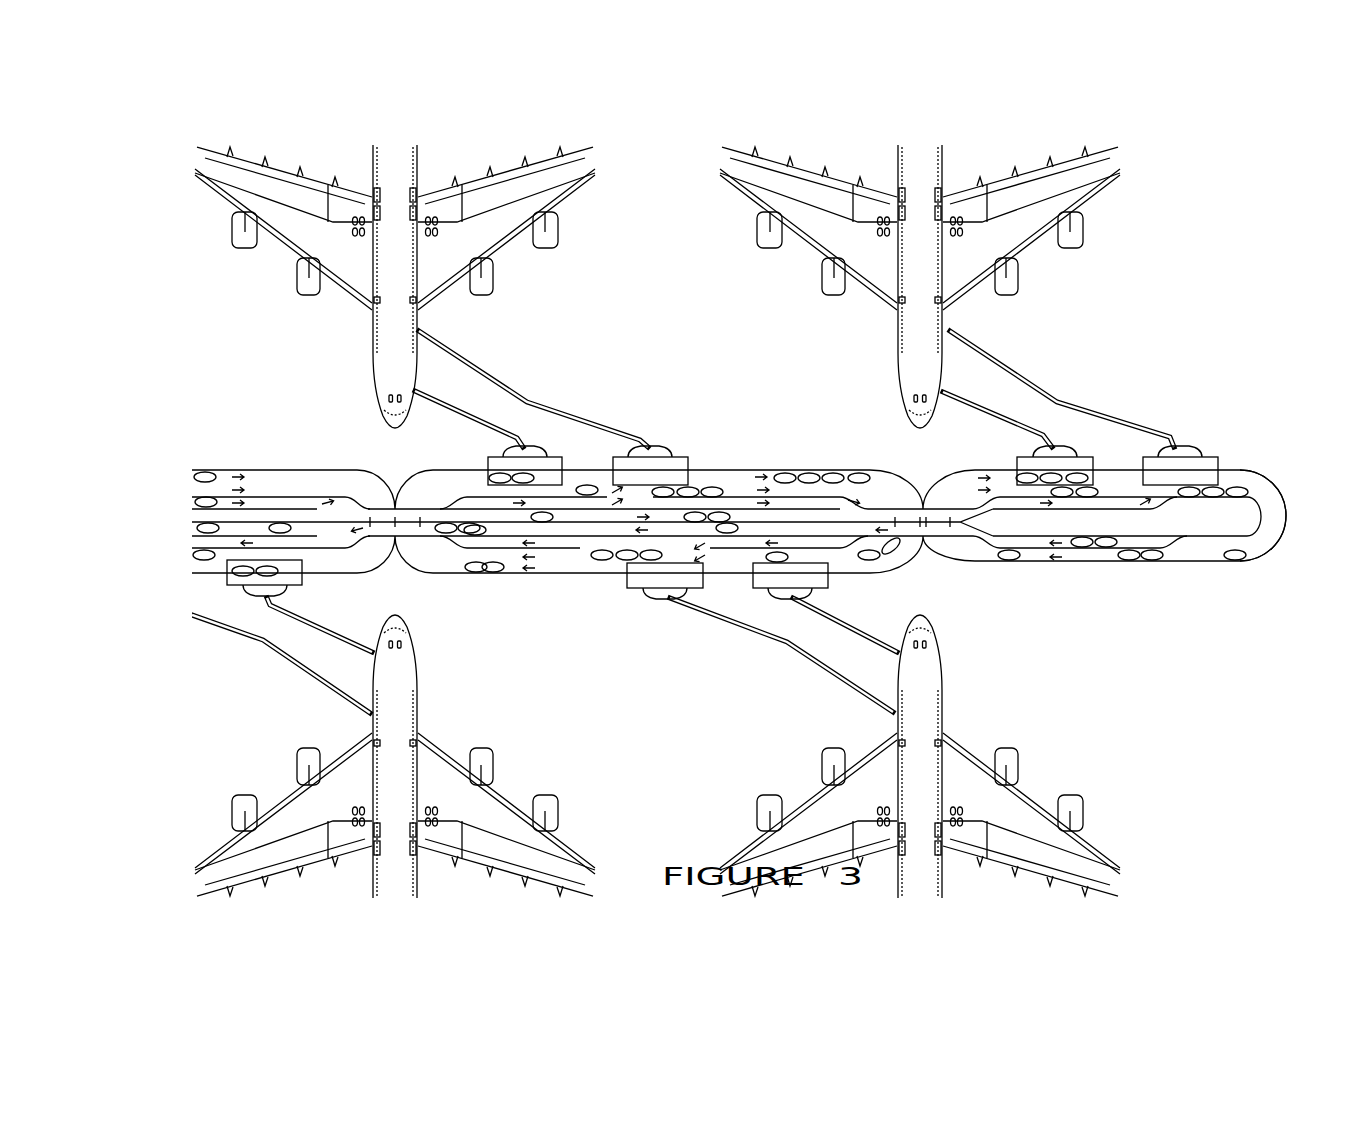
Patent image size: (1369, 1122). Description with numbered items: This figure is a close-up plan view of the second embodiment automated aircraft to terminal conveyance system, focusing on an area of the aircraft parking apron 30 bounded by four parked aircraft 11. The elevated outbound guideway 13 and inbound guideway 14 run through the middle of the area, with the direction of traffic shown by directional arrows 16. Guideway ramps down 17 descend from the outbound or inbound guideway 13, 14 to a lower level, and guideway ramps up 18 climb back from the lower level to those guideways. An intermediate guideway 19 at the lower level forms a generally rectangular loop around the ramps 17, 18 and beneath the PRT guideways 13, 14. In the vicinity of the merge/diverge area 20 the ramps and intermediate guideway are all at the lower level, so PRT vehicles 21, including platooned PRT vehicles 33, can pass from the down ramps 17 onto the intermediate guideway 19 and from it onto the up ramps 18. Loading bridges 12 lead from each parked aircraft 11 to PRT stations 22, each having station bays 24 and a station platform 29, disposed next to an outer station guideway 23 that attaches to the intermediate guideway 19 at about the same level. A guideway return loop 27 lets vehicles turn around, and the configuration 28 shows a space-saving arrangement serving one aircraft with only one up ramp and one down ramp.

The parked aircraft 11 is at (610, 165).
The aircraft loading bridge 12 is at (452, 410).
The outbound guideway 13 is at (783, 520).
The inbound guideway 14 is at (515, 530).
The directional arrow indicating direction of traffic 16 is at (436, 500).
The guideway ramp down 17 is at (487, 503).
The guideway ramp up 18 is at (822, 503).
The intermediate guideway 19 is at (972, 493).
The merge/diverge area 20 is at (647, 480).
The PRT vehicle 21 is at (280, 523).
The station 22 is at (633, 497).
The station guideway 23 is at (710, 492).
The station bay 24 is at (550, 480).
The guideway return loop 27 is at (905, 556).
The configuration serving only one aircraft with one up and one down ramp only 28 is at (1220, 563).
The station platform 29 is at (640, 592).
The aircraft parking apron 30 is at (758, 300).
The platooned PRT vehicles 33 is at (467, 531).